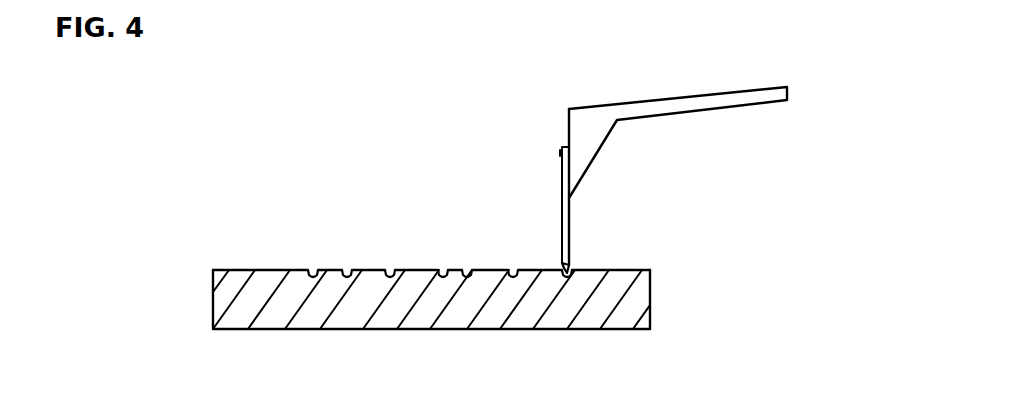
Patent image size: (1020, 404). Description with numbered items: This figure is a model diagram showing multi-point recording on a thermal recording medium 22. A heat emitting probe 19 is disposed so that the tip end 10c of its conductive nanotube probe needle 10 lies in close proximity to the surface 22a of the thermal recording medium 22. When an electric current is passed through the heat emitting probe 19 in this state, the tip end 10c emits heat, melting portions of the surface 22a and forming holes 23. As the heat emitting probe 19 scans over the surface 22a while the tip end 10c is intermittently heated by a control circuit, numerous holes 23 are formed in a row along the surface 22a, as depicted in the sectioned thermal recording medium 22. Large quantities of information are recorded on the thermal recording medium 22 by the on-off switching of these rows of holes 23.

The conductive nanotube probe needle 10 is at (569, 220).
The tip end 10c is at (569, 257).
The heat emitting probe 19 is at (704, 78).
The thermal recording medium 22 is at (488, 313).
The surface 22a is at (282, 270).
The holes 23 is at (349, 276).